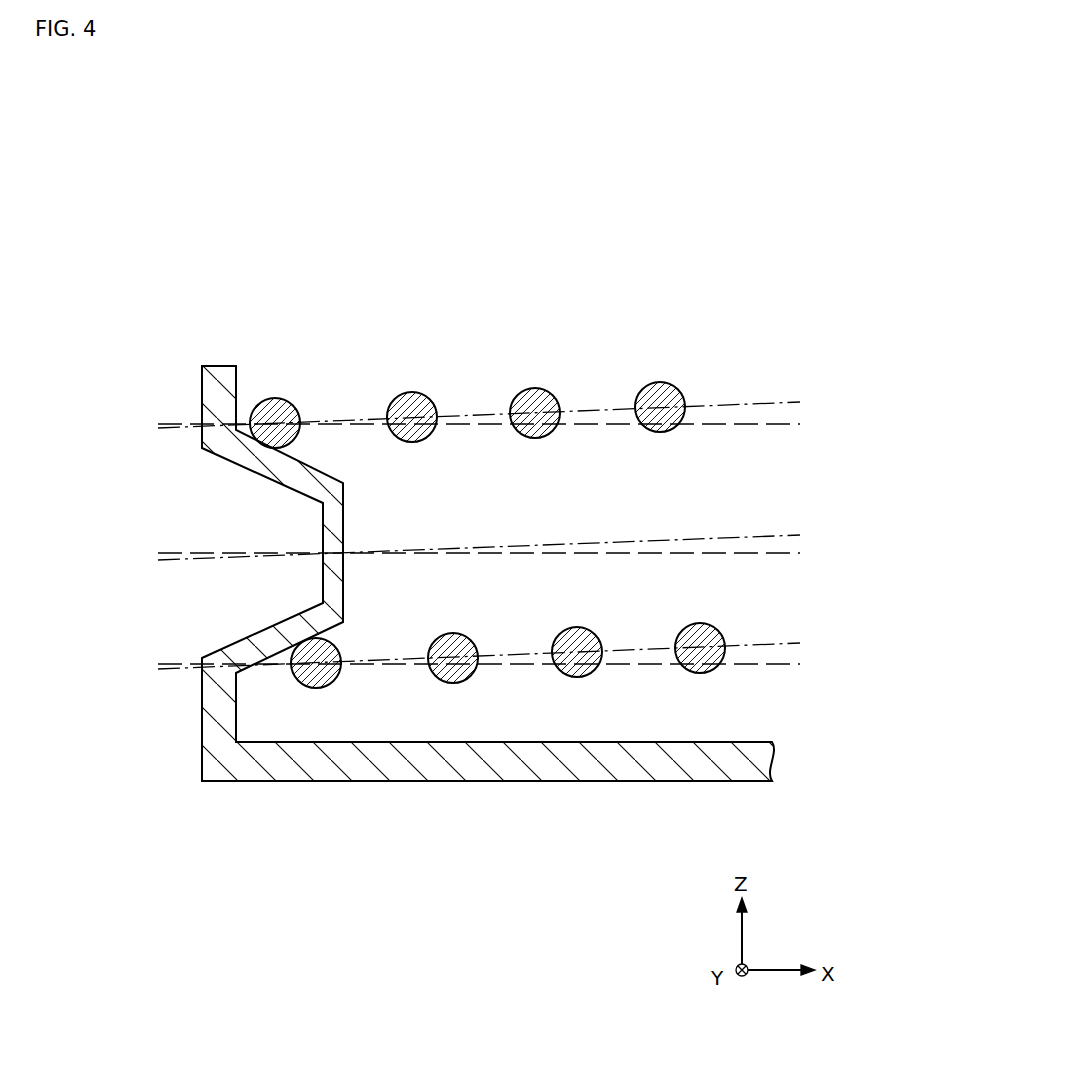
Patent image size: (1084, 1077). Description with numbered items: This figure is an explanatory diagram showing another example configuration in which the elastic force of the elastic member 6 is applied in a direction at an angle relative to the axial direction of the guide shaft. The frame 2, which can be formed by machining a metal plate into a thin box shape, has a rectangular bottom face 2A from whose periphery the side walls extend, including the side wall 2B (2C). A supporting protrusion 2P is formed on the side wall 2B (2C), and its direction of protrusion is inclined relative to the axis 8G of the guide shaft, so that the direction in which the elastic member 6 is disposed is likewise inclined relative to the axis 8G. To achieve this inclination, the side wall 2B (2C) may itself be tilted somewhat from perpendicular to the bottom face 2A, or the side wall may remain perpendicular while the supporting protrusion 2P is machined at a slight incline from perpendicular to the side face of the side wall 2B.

The frame 2 is at (543, 800).
The bottom face 2A is at (727, 742).
The side wall 2B is at (156, 402).
The side wall 2C is at (202, 383).
The supporting protrusion 2P is at (345, 515).
The elastic member 6 is at (413, 392).
The axis 8G is at (780, 555).